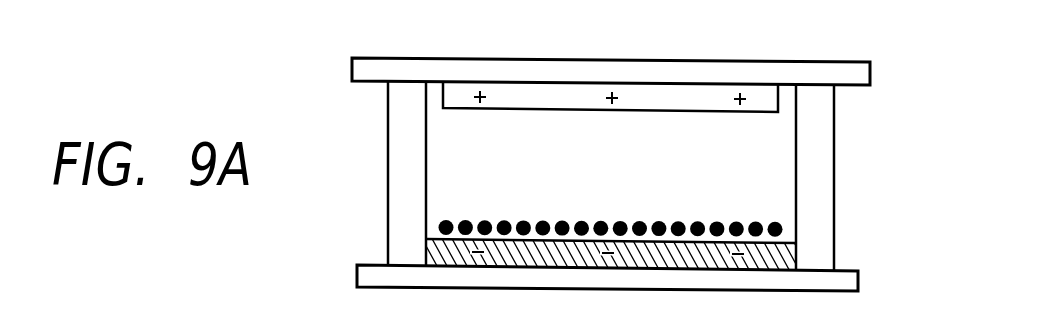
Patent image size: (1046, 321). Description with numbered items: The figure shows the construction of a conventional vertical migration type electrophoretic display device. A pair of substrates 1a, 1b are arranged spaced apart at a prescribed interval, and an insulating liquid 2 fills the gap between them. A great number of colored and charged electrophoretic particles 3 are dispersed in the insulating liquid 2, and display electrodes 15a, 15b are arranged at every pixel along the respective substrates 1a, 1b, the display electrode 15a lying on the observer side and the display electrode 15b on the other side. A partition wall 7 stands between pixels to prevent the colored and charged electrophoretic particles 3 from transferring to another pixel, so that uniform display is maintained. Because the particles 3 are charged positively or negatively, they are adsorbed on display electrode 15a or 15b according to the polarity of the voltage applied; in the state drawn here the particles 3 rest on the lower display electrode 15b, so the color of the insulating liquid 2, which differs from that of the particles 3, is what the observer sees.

The substrate 1a is at (855, 76).
The substrate 1b is at (848, 284).
The partition wall 7 is at (403, 141).
The display electrode 15a is at (697, 95).
The display electrode 15b is at (783, 255).
The colored and charged electrophoretic particles 3 is at (721, 222).
The insulating liquid 2 is at (620, 166).